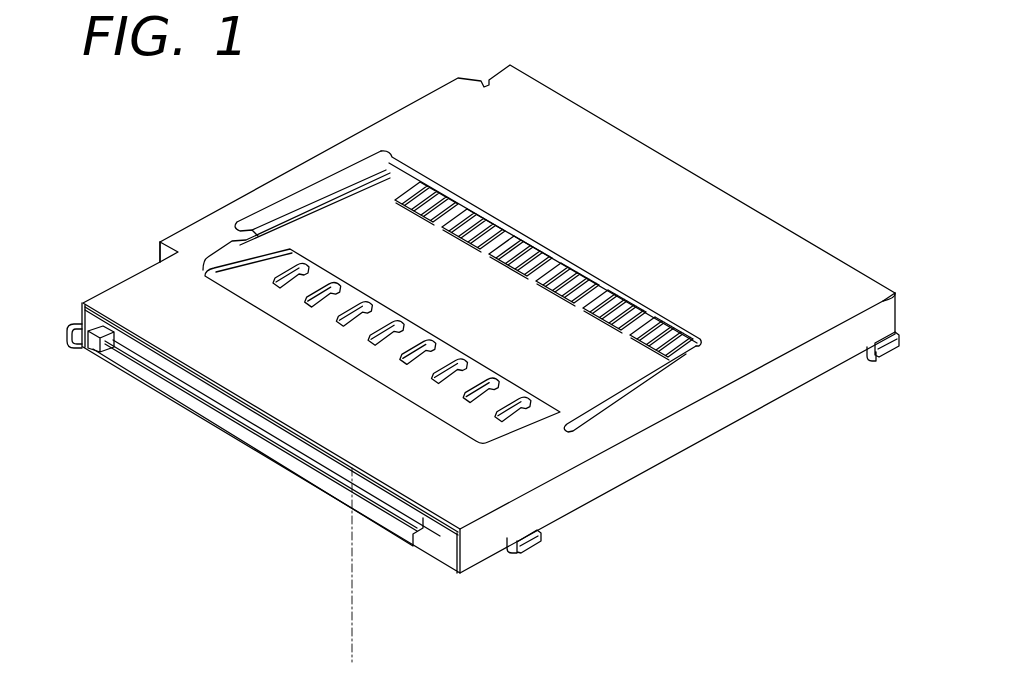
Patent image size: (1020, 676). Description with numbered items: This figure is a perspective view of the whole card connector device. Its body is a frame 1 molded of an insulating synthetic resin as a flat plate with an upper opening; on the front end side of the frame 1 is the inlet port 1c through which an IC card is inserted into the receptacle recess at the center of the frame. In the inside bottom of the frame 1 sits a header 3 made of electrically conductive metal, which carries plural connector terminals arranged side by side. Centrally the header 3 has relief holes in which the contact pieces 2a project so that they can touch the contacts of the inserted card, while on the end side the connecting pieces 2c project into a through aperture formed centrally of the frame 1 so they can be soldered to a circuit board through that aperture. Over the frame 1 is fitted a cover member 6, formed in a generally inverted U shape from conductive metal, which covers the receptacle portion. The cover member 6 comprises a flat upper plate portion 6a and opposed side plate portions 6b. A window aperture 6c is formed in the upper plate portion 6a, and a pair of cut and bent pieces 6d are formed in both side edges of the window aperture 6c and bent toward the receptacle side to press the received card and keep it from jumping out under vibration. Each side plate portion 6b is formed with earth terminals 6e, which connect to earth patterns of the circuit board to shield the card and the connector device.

The frame 1 is at (427, 570).
The inlet port 1c is at (232, 410).
The contact pieces 2a is at (516, 252).
The connecting pieces 2c is at (176, 397).
The header 3 is at (405, 240).
The cover member 6 is at (485, 330).
The upper plate portion 6a is at (643, 198).
The side plate portions 6b is at (165, 250).
The window aperture 6c is at (400, 385).
The cut and bent pieces 6d is at (322, 198).
The earth terminals 6e is at (878, 352).